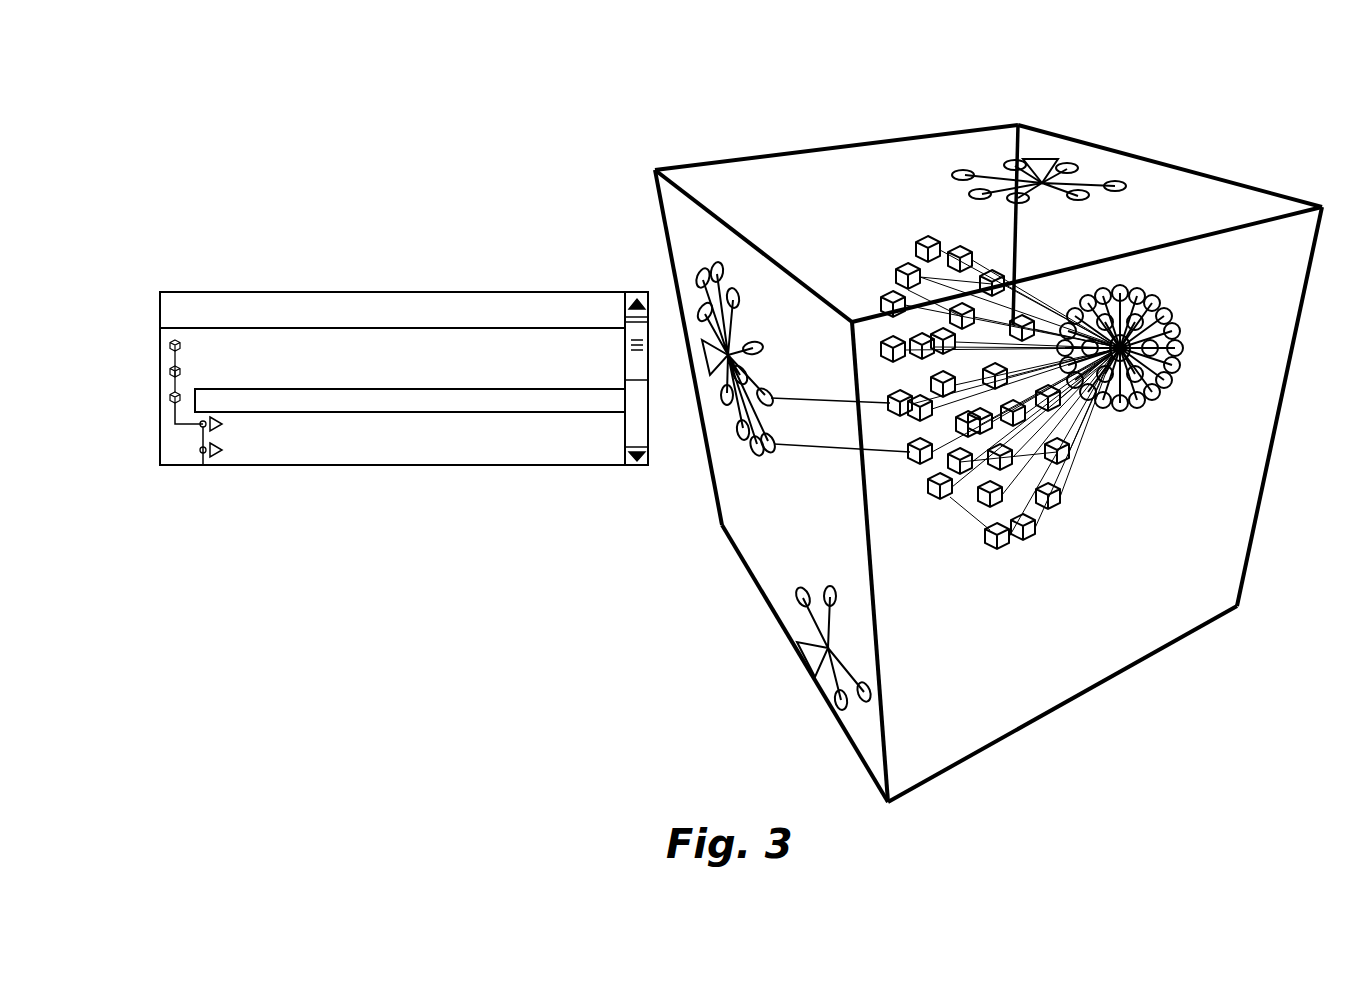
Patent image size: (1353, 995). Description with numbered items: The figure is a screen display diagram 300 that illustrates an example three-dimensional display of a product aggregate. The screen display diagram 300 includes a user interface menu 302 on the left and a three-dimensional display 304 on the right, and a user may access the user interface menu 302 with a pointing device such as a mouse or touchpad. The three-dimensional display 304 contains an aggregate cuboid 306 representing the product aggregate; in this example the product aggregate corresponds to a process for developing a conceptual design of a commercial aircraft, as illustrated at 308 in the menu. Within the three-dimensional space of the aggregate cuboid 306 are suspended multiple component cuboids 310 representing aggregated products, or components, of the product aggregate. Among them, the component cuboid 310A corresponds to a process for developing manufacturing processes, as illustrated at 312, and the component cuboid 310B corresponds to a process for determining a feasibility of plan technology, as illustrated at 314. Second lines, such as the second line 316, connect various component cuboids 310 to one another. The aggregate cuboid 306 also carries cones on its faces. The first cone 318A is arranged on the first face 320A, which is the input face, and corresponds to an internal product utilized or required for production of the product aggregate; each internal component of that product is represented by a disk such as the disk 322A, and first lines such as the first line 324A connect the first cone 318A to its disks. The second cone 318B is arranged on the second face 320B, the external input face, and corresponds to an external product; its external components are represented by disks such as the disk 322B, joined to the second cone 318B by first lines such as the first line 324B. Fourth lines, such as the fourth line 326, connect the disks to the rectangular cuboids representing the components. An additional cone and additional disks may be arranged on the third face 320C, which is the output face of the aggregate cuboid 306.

The screen display diagram 300 is at (1244, 118).
The user interface menu 302 is at (296, 279).
The three-dimensional display 304 is at (852, 127).
The aggregate cuboid 306 is at (1074, 138).
The process for developing a conceptual design of a commercial aircraft 308 is at (150, 398).
The component cuboids 310 is at (1008, 590).
The component cuboid 310A is at (1058, 512).
The component cuboid 310B is at (1032, 546).
The process for developing manufacturing processes 312 is at (150, 424).
The process for determining a feasibility of plan technology 314 is at (150, 450).
The second line 316 is at (955, 503).
The first cone 318A is at (800, 660).
The second cone 318B is at (1040, 157).
The first face 320A is at (730, 571).
The second face 320B is at (808, 211).
The third face 320C is at (1194, 436).
The disk 322A is at (830, 590).
The disk 322B is at (1078, 196).
The first line 324A is at (832, 632).
The first line 324B is at (1060, 192).
The fourth line 326 is at (784, 393).